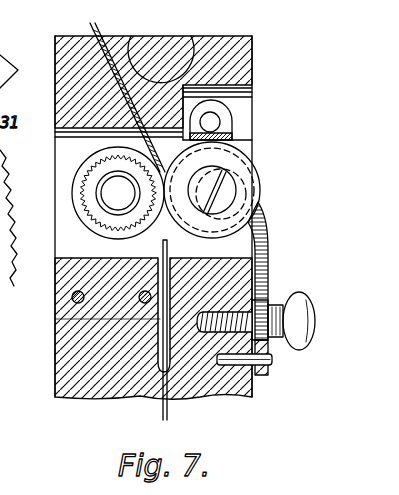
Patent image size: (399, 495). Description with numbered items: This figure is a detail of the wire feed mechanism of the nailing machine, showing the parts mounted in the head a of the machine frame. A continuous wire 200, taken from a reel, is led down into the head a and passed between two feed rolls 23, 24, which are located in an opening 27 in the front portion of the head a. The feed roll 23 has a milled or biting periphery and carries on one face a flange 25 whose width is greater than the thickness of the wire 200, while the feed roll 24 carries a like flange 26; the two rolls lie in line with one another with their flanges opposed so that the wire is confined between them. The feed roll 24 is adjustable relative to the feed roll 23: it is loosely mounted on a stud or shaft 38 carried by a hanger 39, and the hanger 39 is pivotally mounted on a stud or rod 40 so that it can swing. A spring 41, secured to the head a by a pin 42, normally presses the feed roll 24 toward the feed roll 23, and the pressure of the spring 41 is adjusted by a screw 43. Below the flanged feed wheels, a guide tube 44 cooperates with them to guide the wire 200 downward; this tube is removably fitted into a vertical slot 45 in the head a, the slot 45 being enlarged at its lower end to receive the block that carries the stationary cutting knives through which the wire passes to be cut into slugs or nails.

The feed roll 23 is at (78, 191).
The feed roll 24 is at (253, 184).
The flange 25 is at (76, 228).
The flange 26 is at (262, 202).
The opening 27 is at (62, 154).
The stud or shaft 38 is at (221, 213).
The hanger 39 is at (230, 127).
The stud or rod 40 is at (216, 119).
The spring 41 is at (269, 262).
The pin 42 is at (270, 365).
The screw 43 is at (292, 297).
The guide tube 44 is at (162, 252).
The vertical slot 45 is at (172, 257).
The wire 200 is at (168, 418).
The head a is at (55, 355).